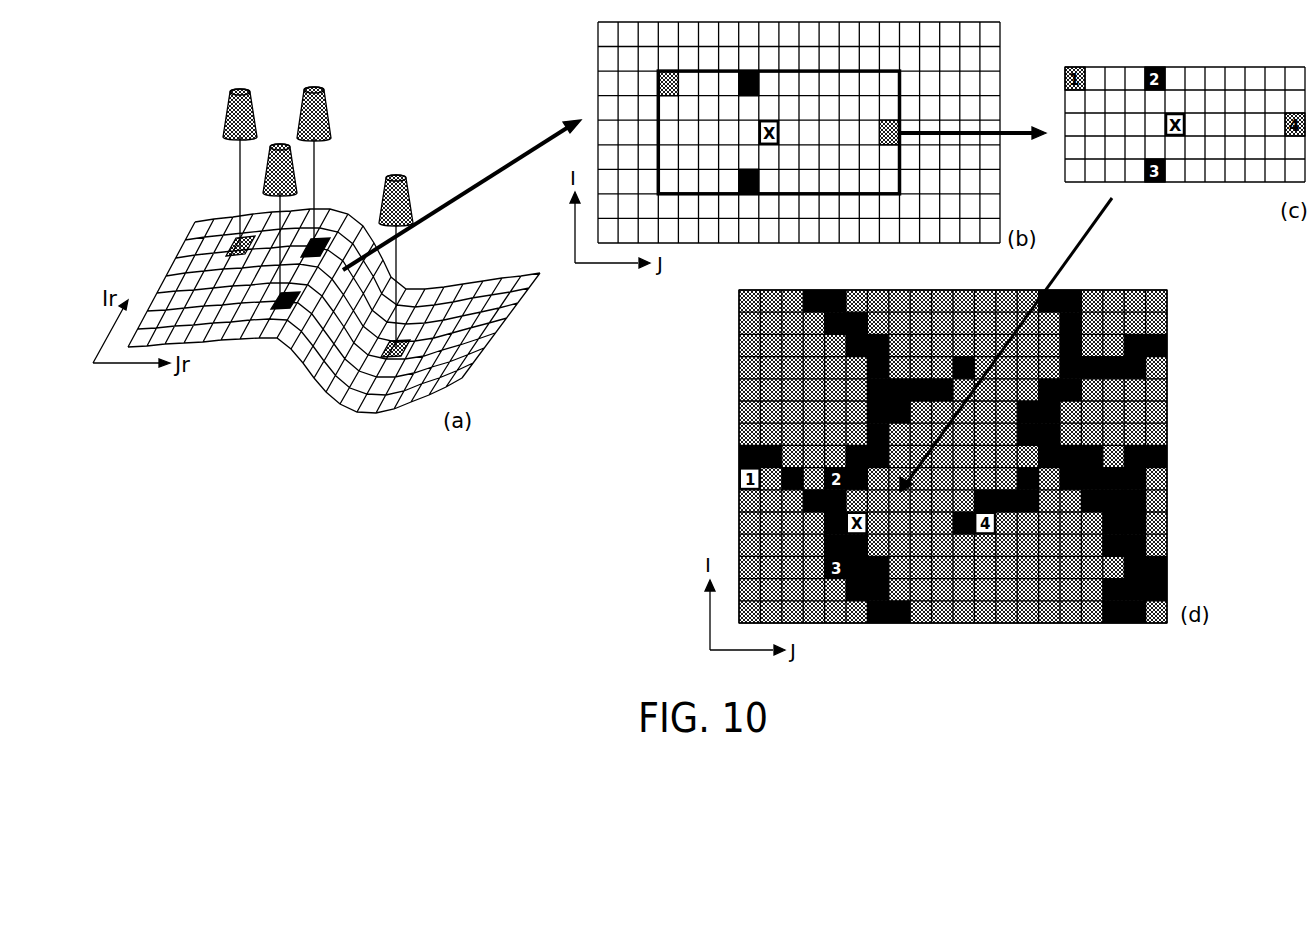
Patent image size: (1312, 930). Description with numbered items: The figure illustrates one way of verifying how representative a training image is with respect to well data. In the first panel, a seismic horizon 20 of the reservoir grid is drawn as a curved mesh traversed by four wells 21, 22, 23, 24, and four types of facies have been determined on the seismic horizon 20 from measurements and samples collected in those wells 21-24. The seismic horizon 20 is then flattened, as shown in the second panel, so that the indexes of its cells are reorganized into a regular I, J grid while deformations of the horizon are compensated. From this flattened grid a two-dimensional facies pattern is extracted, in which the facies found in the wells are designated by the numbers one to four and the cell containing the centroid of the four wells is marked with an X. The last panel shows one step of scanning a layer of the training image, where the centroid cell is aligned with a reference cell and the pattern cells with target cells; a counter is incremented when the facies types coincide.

The seismic horizon 20 is at (378, 414).
The well 21 is at (240, 170).
The well 22 is at (315, 169).
The well 23 is at (280, 222).
The well 24 is at (397, 261).